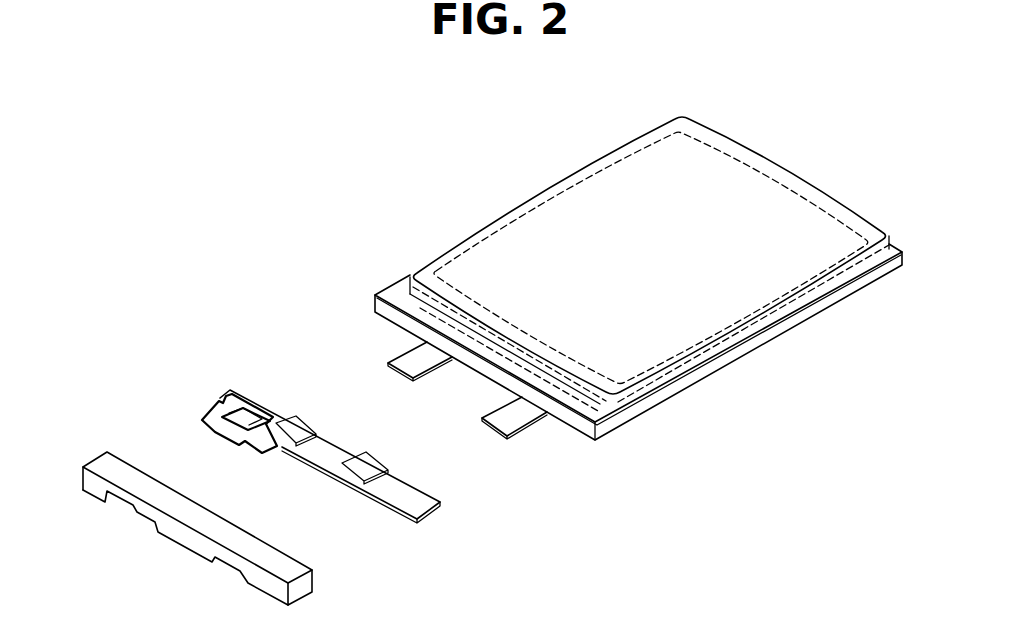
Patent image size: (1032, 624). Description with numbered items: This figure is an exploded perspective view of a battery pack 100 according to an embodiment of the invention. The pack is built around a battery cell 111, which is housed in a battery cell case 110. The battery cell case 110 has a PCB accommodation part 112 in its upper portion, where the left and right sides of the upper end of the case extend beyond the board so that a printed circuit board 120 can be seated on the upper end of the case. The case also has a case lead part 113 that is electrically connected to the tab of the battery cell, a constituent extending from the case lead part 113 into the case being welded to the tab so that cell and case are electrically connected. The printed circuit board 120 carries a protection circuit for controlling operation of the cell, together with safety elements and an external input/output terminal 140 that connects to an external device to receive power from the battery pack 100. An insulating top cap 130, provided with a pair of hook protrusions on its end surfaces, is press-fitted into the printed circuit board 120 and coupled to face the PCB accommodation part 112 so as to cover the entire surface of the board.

The battery pack 100 is at (187, 142).
The battery cell case 110 is at (513, 209).
The battery cell 111 is at (612, 153).
The PCB accommodation part 112 is at (400, 313).
The case lead part 113 is at (414, 364).
The printed circuit board 120 is at (240, 390).
The top cap 130 is at (107, 457).
The external input/output terminal 140 is at (218, 408).